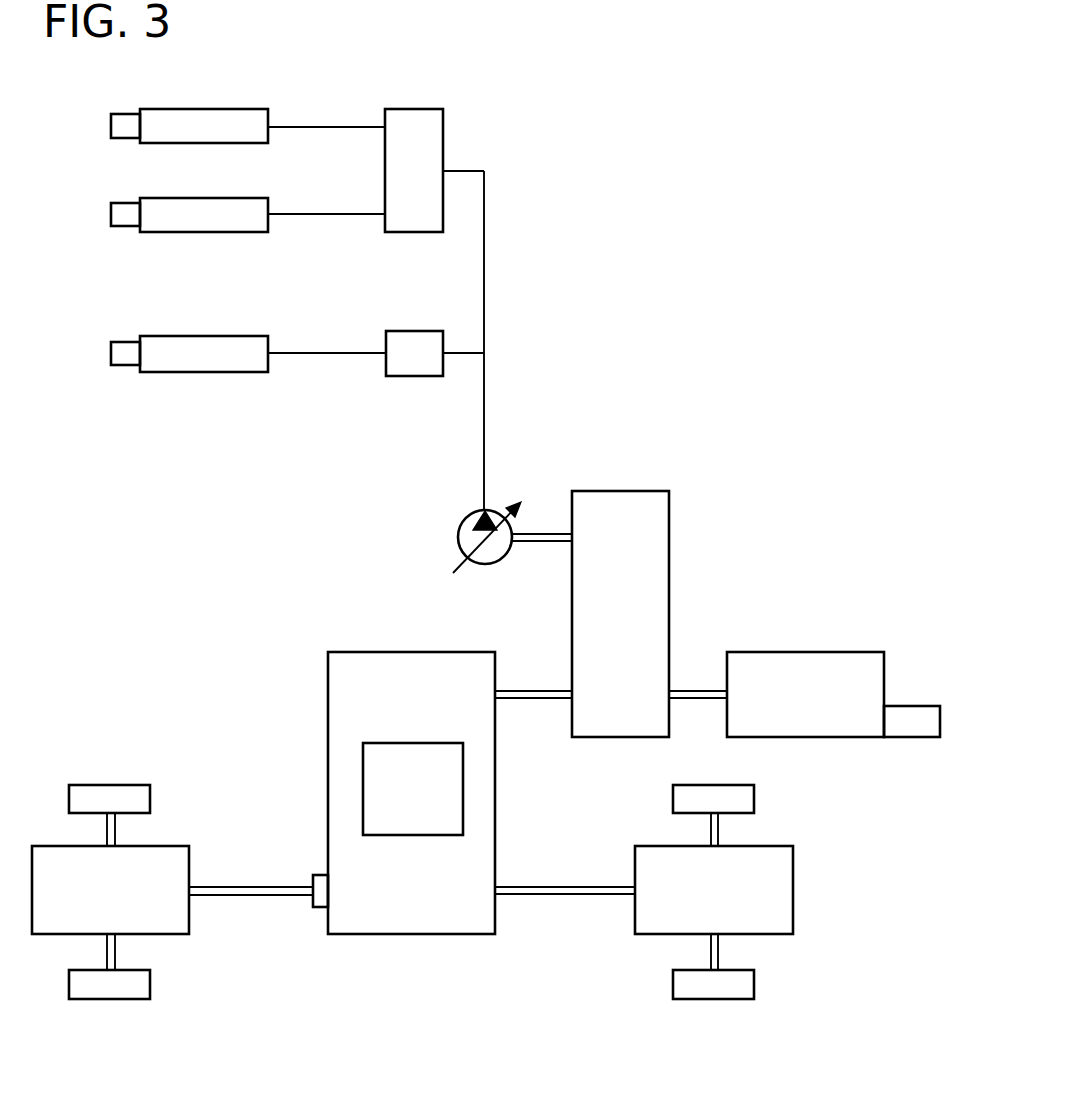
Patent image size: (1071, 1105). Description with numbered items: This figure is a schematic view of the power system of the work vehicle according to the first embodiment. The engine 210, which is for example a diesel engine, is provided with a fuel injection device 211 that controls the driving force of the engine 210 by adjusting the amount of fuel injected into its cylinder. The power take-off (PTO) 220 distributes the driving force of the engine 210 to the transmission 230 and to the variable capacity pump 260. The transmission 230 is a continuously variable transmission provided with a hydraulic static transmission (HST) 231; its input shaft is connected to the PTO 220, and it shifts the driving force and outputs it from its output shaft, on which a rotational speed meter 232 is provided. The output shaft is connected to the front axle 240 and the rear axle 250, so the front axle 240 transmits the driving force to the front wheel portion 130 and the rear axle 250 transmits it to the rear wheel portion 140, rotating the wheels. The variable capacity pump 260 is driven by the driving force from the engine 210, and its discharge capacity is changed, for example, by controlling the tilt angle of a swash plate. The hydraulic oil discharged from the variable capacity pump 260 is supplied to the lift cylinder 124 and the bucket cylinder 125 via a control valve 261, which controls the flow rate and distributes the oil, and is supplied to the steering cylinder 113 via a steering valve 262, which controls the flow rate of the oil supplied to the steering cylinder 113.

The steering cylinder 113 is at (212, 336).
The lift cylinder 124 is at (212, 109).
The bucket cylinder 125 is at (212, 198).
The front wheel portion 130 is at (150, 797).
The rear wheel portion 140 is at (754, 797).
The engine 210 is at (810, 652).
The fuel injection device 211 is at (910, 706).
The power take-off (PTO) 220 is at (620, 491).
The transmission 230 is at (412, 934).
The hydraulic static transmission (HST) 231 is at (430, 743).
The rotational speed meter 232 is at (318, 907).
The front axle 240 is at (189, 866).
The rear axle 250 is at (793, 886).
The variable capacity pump 260 is at (487, 563).
The control valve 261 is at (413, 109).
The steering valve 262 is at (415, 331).